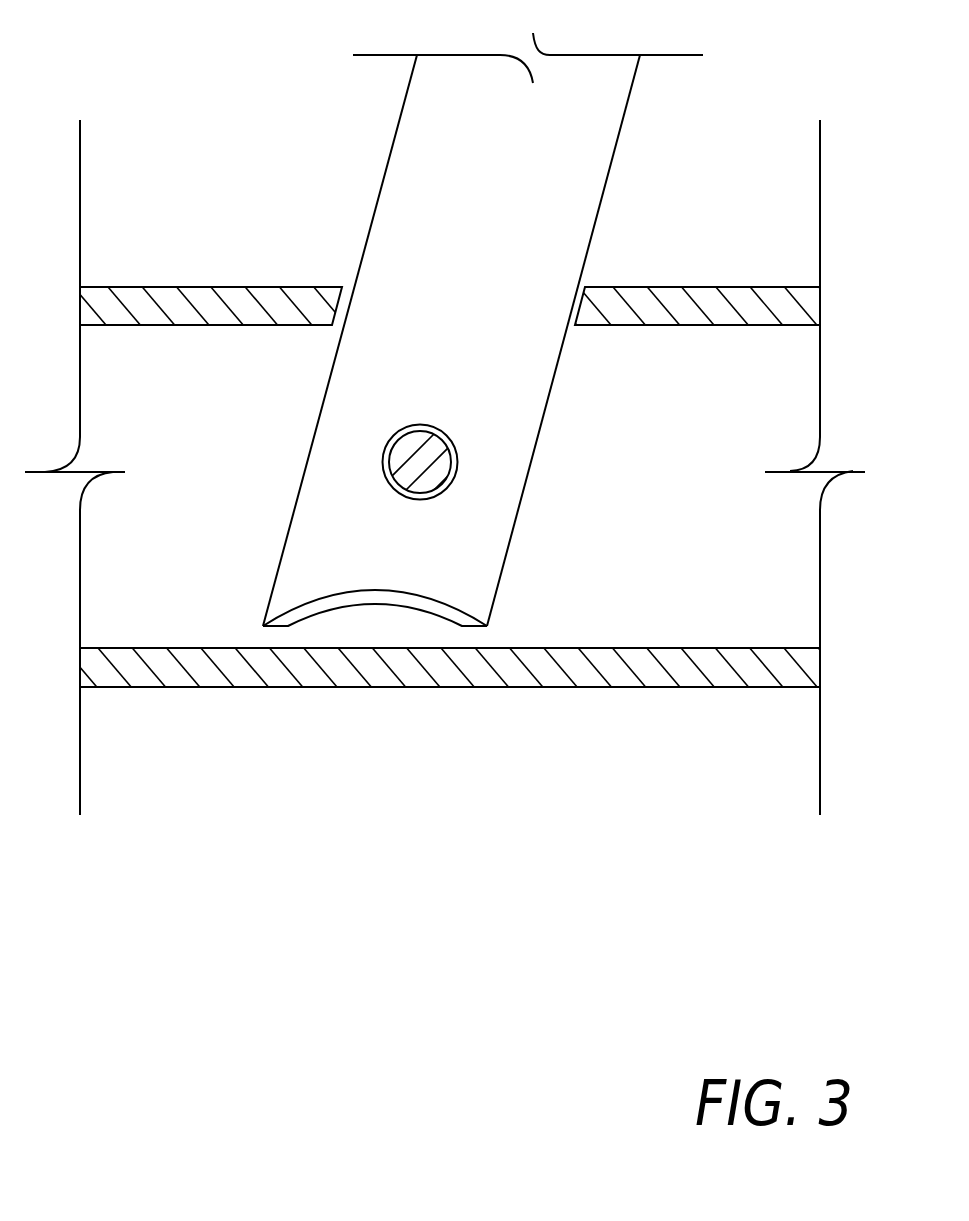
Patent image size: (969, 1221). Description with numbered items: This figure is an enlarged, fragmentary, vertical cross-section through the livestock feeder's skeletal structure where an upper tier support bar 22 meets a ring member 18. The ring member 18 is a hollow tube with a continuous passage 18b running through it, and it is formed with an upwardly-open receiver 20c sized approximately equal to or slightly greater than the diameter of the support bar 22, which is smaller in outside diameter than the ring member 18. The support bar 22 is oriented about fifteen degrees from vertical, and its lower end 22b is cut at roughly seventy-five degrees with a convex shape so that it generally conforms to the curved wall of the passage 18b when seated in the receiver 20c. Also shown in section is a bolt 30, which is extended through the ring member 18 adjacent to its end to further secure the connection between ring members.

The ring member 18 is at (823, 667).
The continuous passage 18b is at (743, 583).
The upwardly-open receiver 20c is at (575, 302).
The upper tier support bar 22 is at (530, 162).
The lower end of upper tier support bar 22b is at (465, 622).
The bolt 30 is at (390, 477).